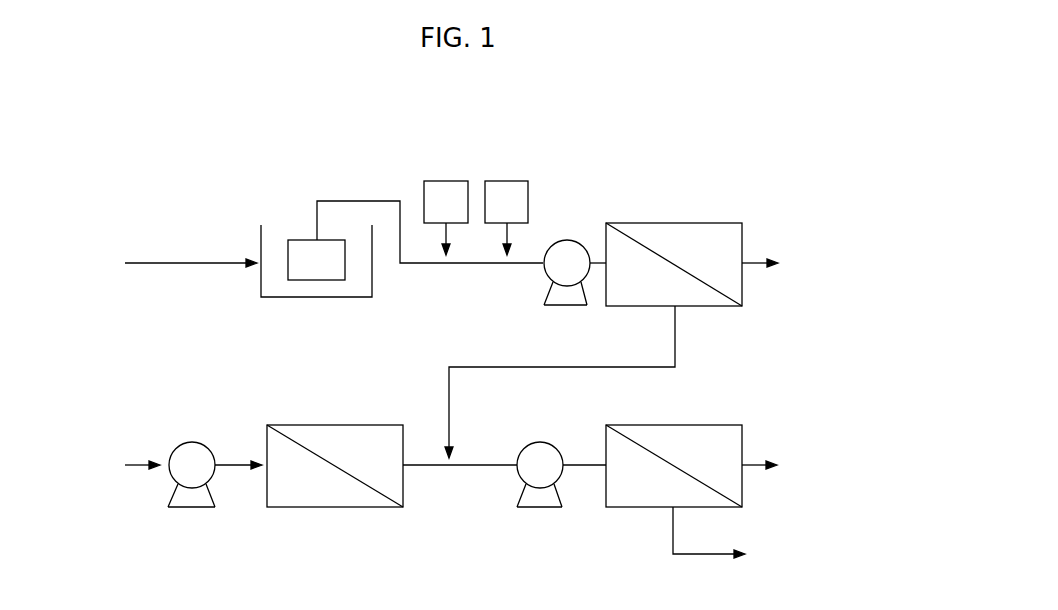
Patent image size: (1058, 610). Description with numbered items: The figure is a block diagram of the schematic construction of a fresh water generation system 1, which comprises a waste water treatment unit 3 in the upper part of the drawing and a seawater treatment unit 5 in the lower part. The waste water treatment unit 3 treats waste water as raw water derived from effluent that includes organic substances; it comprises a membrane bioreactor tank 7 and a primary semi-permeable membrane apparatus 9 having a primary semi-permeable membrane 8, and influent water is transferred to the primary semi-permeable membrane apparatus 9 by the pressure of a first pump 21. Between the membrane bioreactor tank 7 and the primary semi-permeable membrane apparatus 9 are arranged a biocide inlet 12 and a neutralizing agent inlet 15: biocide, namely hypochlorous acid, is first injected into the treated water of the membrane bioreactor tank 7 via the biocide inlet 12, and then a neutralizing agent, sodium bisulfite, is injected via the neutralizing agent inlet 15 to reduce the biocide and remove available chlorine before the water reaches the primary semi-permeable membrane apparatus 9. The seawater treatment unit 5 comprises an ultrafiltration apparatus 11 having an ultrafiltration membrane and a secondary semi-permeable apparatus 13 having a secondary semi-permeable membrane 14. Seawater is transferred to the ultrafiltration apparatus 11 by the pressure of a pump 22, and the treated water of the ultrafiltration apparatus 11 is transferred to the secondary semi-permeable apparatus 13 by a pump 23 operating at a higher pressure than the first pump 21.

The fresh water generation system 1 is at (668, 108).
The waste water treatment unit 3 is at (215, 208).
The seawater treatment unit 5 is at (262, 382).
The membrane bioreactor tank 7 is at (277, 188).
The primary semi-permeable membrane 8 is at (682, 265).
The primary semi-permeable membrane apparatus 9 is at (657, 223).
The ultrafiltration apparatus 11 is at (312, 425).
The biocide inlet 12 is at (446, 181).
The secondary semi-permeable apparatus 13 is at (657, 425).
The secondary semi-permeable membrane 14 is at (680, 467).
The neutralizing agent inlet 15 is at (507, 181).
The first pump 21 is at (567, 240).
The pump 22 is at (190, 442).
The pump 23 is at (540, 442).